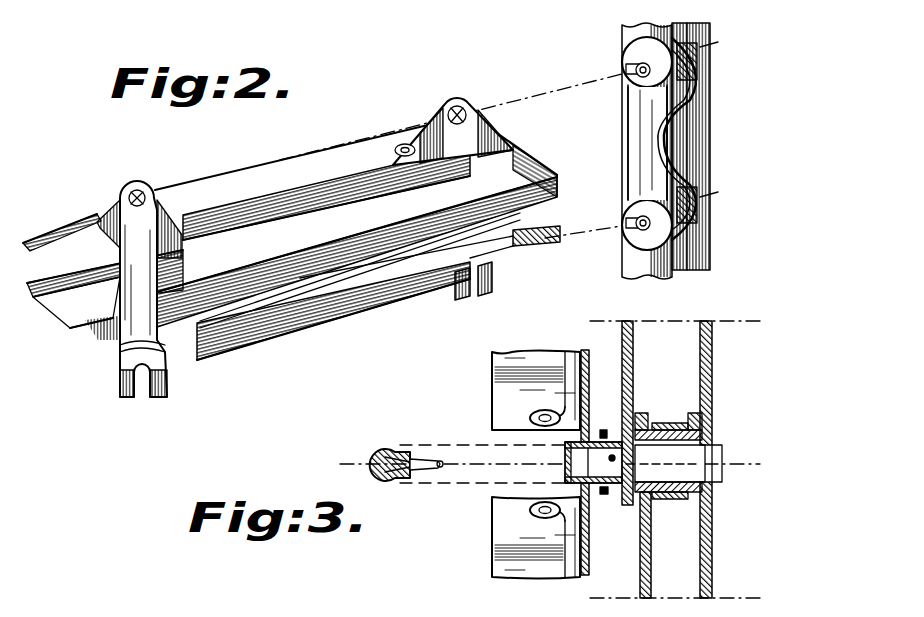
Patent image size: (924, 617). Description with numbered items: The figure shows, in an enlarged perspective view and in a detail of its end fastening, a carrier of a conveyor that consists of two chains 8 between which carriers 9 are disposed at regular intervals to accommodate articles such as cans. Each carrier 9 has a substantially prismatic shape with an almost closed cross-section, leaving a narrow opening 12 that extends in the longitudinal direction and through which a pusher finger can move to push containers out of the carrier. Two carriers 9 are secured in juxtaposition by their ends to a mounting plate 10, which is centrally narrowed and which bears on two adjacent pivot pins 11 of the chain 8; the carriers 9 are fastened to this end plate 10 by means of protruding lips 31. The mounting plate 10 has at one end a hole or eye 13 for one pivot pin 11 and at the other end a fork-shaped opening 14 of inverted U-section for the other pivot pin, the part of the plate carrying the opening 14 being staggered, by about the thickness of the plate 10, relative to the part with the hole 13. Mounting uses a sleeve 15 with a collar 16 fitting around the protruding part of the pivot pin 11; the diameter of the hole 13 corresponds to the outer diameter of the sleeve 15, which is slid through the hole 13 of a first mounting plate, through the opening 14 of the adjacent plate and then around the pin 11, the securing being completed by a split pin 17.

In FIG. 2, the chain 8 is at (578, 72).
In FIG. 3, the chain 8 is at (634, 357).
In FIG. 2, the carrier 9 is at (366, 130).
In FIG. 3, the carrier 9 is at (527, 364).
In FIG. 2, the mounting plate 10 is at (499, 140).
In FIG. 3, the mounting plate 10 is at (580, 350).
In FIG. 2, the pivot pin 11 is at (637, 68).
In FIG. 3, the pivot pin 11 is at (614, 438).
In FIG. 2, the narrow opening 12 is at (553, 220).
In FIG. 2, the hole 13 is at (457, 108).
In FIG. 2, the opening of inverted U-section 14 is at (464, 294).
In FIG. 3, the sleeve 15 is at (600, 494).
In FIG. 3, the collar 16 is at (567, 430).
In FIG. 3, the split pin 17 is at (440, 458).
In FIG. 2, the protruding lip 31 is at (397, 145).
In FIG. 3, the protruding lip 31 is at (540, 515).